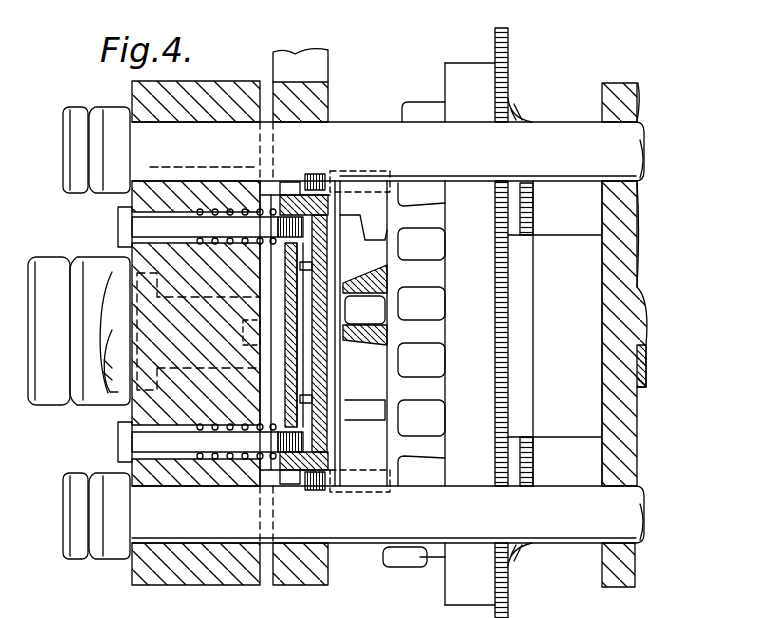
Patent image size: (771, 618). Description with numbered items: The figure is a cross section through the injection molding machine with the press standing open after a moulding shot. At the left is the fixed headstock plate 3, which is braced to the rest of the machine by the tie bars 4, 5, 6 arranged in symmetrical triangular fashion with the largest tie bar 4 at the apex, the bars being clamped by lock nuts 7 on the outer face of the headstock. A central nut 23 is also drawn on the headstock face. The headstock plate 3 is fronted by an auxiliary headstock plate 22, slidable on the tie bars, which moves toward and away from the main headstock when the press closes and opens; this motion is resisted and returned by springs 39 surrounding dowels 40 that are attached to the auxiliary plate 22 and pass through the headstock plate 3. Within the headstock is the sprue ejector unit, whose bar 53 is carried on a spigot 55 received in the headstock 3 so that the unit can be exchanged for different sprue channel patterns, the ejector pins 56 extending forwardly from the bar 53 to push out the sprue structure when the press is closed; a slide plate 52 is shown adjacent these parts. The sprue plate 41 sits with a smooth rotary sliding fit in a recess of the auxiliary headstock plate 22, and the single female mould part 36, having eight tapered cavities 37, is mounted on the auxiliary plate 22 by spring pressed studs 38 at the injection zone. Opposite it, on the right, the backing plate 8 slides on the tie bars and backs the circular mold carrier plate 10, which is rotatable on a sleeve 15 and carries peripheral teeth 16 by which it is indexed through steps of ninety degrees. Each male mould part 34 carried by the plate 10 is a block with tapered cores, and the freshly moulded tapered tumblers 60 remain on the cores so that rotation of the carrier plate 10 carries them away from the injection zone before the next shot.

The headstock plate 3 is at (143, 564).
The tie bar 4 is at (643, 290).
The tie bar 5 is at (568, 538).
The tie bar 6 is at (566, 130).
The clamping lock nut 7 is at (80, 115).
The backing plate 8 is at (600, 581).
The mold carrier plate 10 is at (512, 120).
The sleeve 15 is at (555, 333).
The peripheral teeth 16 is at (497, 606).
The auxiliary headstock plate 22 is at (312, 570).
The central nut 23 is at (110, 398).
The male mould part 34 is at (502, 214).
The female mould part 36 is at (358, 206).
The tapered cavity 37 is at (372, 332).
The spring pressed stud 38 is at (335, 492).
The spring 39 is at (242, 459).
The dowel 40 is at (143, 437).
The sprue plate 41 is at (341, 256).
The slide plate 52 is at (290, 394).
The bar 53 is at (290, 258).
The spigot 55 is at (243, 330).
The ejector pin 56 is at (292, 335).
The tapered tumbler 60 is at (435, 356).